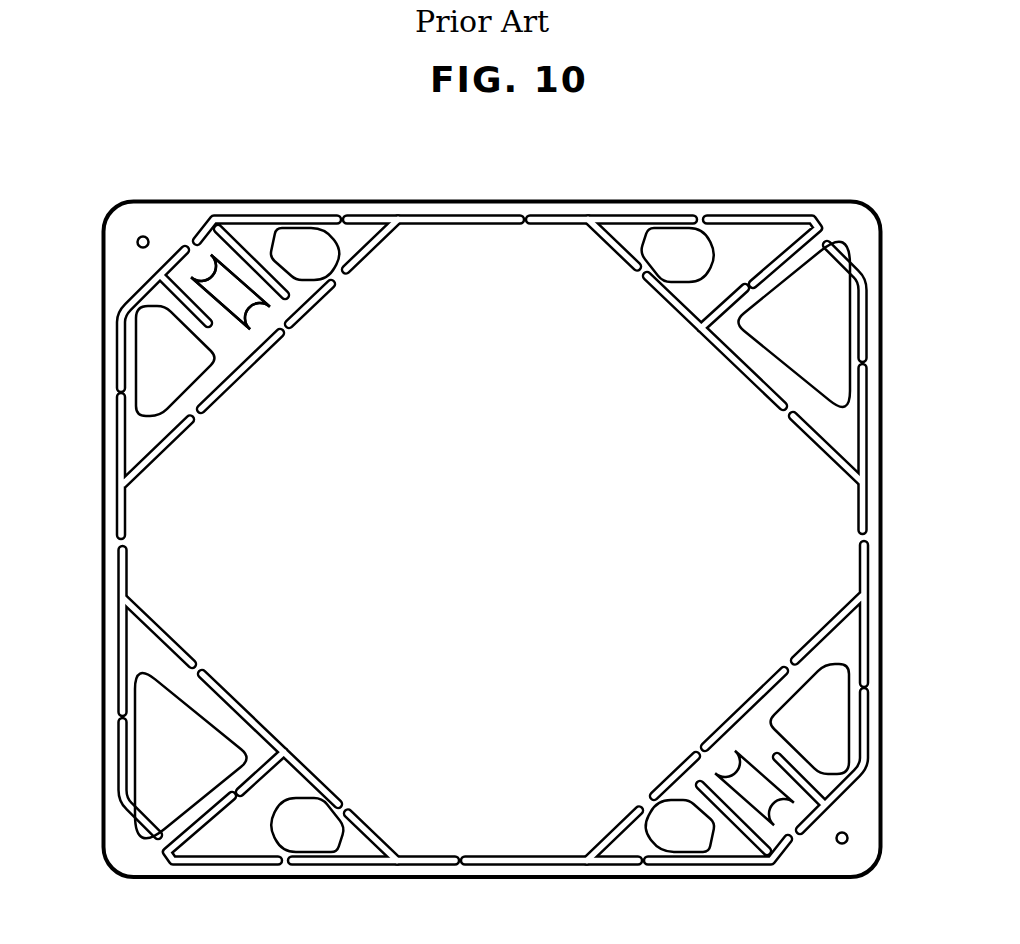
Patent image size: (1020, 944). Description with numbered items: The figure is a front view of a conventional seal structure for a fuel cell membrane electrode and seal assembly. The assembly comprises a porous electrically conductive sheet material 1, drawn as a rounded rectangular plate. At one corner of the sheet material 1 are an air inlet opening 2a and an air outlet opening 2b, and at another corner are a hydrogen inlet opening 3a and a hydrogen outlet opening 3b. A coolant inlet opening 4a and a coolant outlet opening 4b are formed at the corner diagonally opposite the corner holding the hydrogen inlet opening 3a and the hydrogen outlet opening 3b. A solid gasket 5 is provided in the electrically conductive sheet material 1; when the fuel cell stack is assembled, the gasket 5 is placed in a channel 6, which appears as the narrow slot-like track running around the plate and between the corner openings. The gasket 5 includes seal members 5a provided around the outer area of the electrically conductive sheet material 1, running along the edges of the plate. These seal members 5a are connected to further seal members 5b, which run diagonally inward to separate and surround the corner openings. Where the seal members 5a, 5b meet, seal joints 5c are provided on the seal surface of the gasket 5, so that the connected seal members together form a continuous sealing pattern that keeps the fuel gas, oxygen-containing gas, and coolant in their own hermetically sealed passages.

The electrically conductive sheet material 1 is at (746, 147).
The air inlet opening 2a is at (302, 828).
The air outlet opening 2b is at (175, 757).
The hydrogen inlet opening 3a is at (677, 830).
The hydrogen outlet opening 3b is at (823, 718).
The coolant inlet opening 4a is at (307, 250).
The coolant outlet opening 4b is at (214, 268).
The gasket 5 is at (868, 492).
The seal members 5a is at (465, 215).
The seal members 5b is at (383, 248).
The seal joints 5c is at (400, 215).
The channel 6 is at (867, 518).